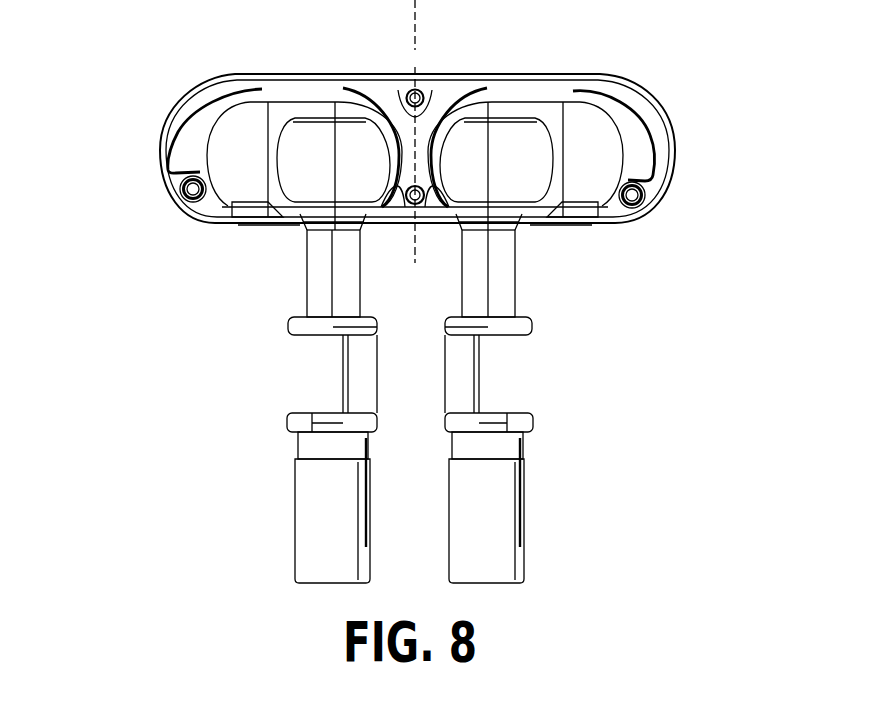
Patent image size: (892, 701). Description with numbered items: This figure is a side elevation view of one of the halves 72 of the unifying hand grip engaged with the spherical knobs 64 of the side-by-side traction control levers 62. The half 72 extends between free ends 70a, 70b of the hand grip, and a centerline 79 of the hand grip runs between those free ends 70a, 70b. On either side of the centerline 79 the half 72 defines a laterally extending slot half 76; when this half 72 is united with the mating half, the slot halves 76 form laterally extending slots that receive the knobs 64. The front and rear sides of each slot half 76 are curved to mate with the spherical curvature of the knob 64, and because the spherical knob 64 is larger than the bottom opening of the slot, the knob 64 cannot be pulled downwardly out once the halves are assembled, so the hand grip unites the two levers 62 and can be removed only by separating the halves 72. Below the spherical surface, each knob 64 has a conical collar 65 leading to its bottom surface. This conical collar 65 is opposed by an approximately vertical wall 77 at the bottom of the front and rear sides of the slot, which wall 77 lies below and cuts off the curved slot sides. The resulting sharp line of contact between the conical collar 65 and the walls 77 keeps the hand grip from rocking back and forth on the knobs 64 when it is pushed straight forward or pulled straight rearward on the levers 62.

The control lever 62 is at (307, 289).
The knob 64 is at (374, 183).
The conical collar 65 is at (318, 218).
The free end 70a is at (156, 152).
The free end 70b is at (671, 160).
The half 72 is at (547, 73).
The slot half 76 is at (237, 133).
The vertical wall 77 is at (292, 207).
The centerline 79 is at (415, 26).